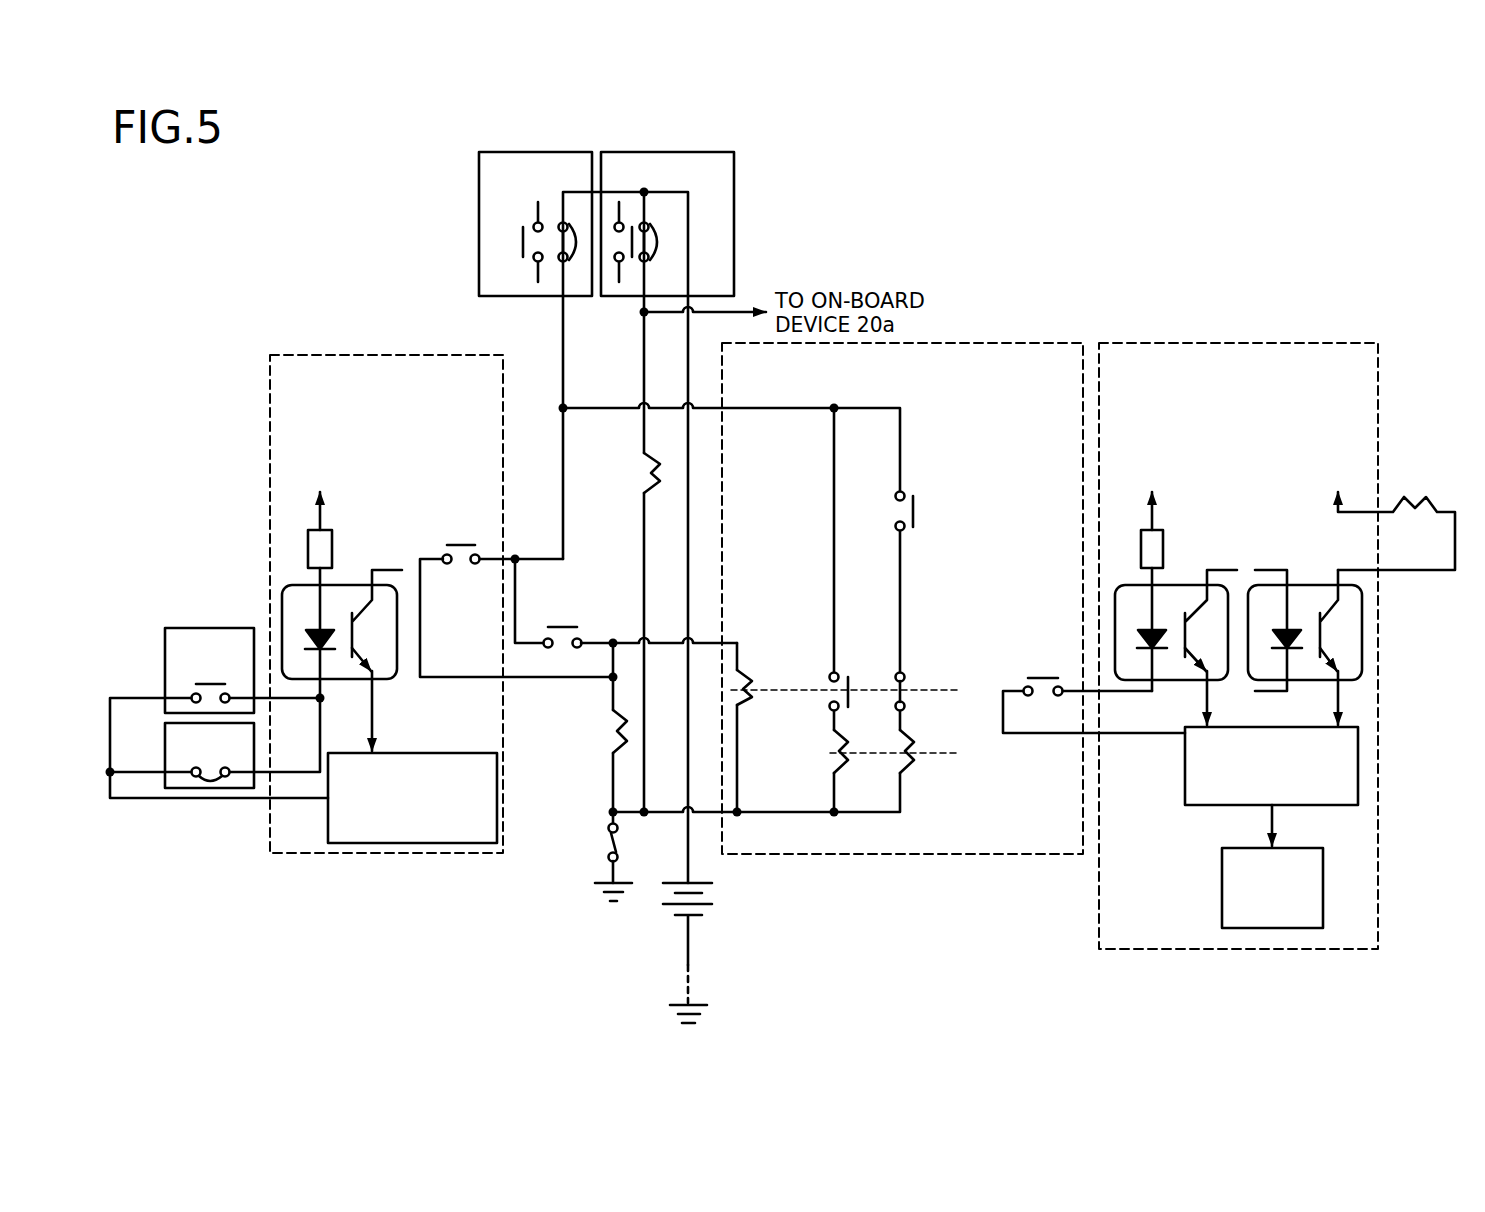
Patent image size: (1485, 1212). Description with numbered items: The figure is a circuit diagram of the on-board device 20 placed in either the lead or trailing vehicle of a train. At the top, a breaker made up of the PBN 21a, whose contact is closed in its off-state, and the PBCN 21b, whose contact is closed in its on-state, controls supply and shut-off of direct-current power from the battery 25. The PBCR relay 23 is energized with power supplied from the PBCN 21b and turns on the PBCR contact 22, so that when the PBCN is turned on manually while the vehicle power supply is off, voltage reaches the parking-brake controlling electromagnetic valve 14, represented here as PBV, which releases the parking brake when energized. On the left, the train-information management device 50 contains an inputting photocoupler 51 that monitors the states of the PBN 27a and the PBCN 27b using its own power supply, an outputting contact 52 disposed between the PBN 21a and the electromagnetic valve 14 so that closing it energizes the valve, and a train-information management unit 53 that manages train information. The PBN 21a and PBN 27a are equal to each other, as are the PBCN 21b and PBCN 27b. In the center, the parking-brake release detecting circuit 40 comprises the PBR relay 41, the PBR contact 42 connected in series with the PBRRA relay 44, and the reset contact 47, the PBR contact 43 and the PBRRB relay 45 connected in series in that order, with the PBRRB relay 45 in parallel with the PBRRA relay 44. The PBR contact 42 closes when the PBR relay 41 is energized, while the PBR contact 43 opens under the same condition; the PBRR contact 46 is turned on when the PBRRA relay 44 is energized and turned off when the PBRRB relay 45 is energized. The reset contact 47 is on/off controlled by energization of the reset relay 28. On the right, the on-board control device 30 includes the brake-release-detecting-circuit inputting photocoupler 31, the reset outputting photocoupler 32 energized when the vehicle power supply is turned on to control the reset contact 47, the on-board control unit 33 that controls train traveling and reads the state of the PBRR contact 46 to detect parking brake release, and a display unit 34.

The parking-brake controlling electromagnetic valve 14 is at (592, 756).
The on-board device 20 is at (1335, 222).
The PBN 21a is at (537, 152).
The PBCN 21b is at (676, 152).
The PBCR contact 22 is at (589, 560).
The PBCR relay 23 is at (668, 474).
The battery 25 is at (729, 891).
The PBN 27a is at (200, 788).
The PBCN 27b is at (197, 628).
The reset relay 28 is at (1422, 517).
The on-board control device 30 is at (1340, 343).
The brake-release-detecting-circuit inputting photocoupler 31 is at (1170, 585).
The reset outputting photocoupler 32 is at (1300, 585).
The on-board control unit 33 is at (1290, 727).
The display unit 34 is at (1283, 848).
The parking-brake release detecting circuit 40 is at (1043, 343).
The PBR relay 41 is at (752, 656).
The PBR contact 42 is at (849, 665).
The PBR contact 43 is at (914, 665).
The PBRRA relay 44 is at (831, 770).
The PBRRB relay 45 is at (918, 768).
The PBRR contact 46 is at (1024, 602).
The reset contact 47 is at (909, 483).
The train-information management device 50 is at (462, 355).
The inputting photocoupler 51 is at (338, 585).
The outputting contact 52 is at (459, 540).
The train-information management unit 53 is at (430, 753).